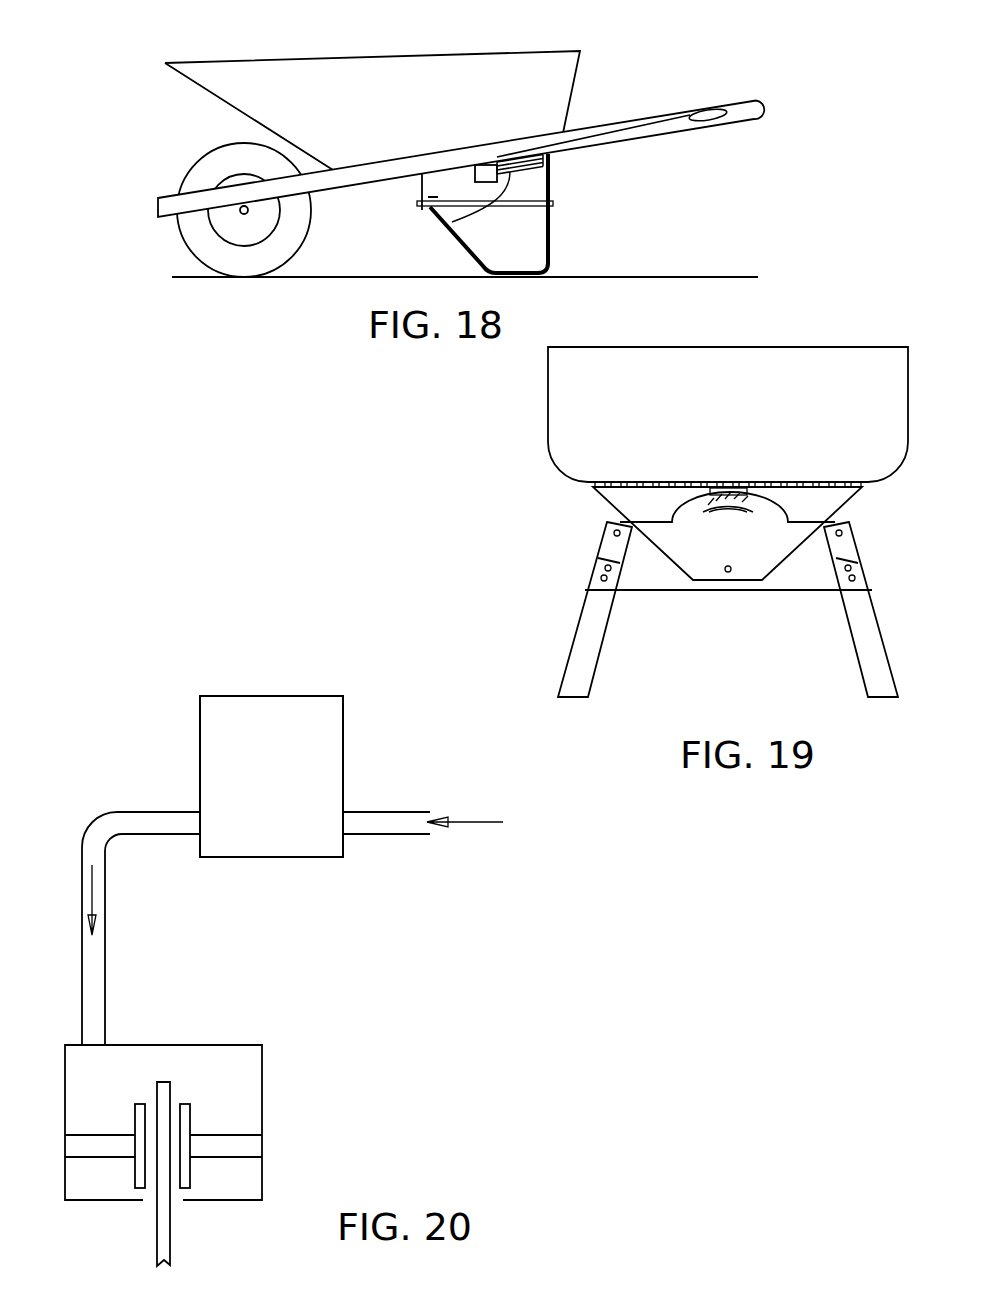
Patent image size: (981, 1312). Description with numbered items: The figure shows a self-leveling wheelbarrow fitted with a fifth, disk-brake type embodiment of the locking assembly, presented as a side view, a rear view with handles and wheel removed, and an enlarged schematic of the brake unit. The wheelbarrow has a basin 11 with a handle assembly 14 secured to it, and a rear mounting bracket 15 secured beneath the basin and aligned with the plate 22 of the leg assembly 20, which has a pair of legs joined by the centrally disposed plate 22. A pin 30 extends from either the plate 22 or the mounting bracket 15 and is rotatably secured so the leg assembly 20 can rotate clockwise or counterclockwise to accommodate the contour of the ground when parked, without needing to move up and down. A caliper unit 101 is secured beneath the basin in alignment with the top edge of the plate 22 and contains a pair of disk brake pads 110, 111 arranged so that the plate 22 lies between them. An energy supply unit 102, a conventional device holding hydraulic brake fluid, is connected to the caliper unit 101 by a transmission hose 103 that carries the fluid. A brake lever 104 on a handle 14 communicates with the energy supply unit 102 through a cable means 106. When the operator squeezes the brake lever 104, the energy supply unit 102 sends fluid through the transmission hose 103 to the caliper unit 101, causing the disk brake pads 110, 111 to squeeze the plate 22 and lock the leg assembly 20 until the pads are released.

In FIG. 18, the basin 11 is at (422, 110).
In FIG. 18, the handle assembly 14 is at (767, 110).
In FIG. 18, the rear mounting bracket 15 is at (551, 181).
In FIG. 19, the rear mounting bracket 15 is at (827, 503).
In FIG. 18, the leg assembly 20 is at (548, 237).
In FIG. 19, the plate 22 is at (712, 549).
In FIG. 20, the plate 22 is at (167, 1233).
In FIG. 18, the pin 30 is at (500, 206).
In FIG. 18, the caliper unit 101 is at (528, 163).
In FIG. 20, the caliper unit 101 is at (253, 1119).
In FIG. 18, the energy supply unit 102 is at (471, 169).
In FIG. 20, the energy supply unit 102 is at (222, 739).
In FIG. 18, the transmission hose 103 is at (483, 210).
In FIG. 20, the transmission hose 103 is at (98, 965).
In FIG. 18, the brake lever 104 is at (711, 123).
In FIG. 18, the cable means 106 is at (613, 125).
In FIG. 20, the cable means 106 is at (385, 825).
In FIG. 19, the disk brake pad 110 is at (738, 503).
In FIG. 20, the disk brake pad 110 is at (188, 1115).
In FIG. 20, the disk brake pad 111 is at (135, 1108).